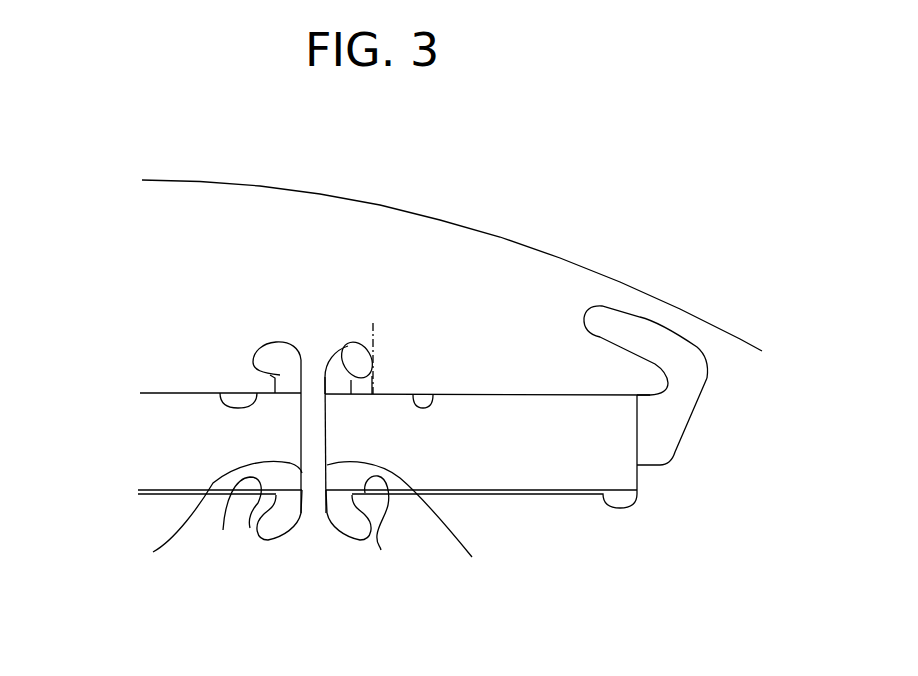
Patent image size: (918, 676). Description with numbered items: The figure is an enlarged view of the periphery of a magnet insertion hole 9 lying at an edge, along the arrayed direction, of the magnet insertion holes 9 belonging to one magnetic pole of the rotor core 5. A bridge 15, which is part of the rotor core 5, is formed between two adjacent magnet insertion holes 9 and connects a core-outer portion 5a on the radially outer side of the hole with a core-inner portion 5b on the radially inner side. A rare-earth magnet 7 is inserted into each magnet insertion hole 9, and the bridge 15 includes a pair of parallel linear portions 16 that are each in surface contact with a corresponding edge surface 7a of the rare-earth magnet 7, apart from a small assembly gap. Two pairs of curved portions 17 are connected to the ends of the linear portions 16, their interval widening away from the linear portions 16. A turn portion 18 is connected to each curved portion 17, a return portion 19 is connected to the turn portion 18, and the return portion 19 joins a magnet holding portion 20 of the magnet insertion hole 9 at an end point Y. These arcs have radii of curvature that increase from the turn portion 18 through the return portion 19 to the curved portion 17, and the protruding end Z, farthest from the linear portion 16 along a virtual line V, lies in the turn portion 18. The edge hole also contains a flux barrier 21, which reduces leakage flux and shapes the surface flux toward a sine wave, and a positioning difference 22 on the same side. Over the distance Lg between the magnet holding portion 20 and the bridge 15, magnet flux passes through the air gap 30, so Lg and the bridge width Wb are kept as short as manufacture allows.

The rotor core 5 is at (615, 136).
The core-outer portion 5a is at (498, 330).
The core-inner portion 5b is at (540, 530).
The rare-earth magnet 7 is at (605, 462).
The edge surface 7a is at (312, 502).
The magnet insertion hole 9 is at (652, 425).
The bridge 15 is at (311, 402).
The linear portion 16 is at (312, 514).
The curved portion 17 is at (272, 345).
The turn portion 18 is at (292, 350).
The return portion 19 is at (272, 368).
The magnet holding portion 20 is at (220, 393).
The flux barrier 21 is at (613, 332).
The positioning difference 22 is at (645, 478).
The air gap 30 is at (275, 380).